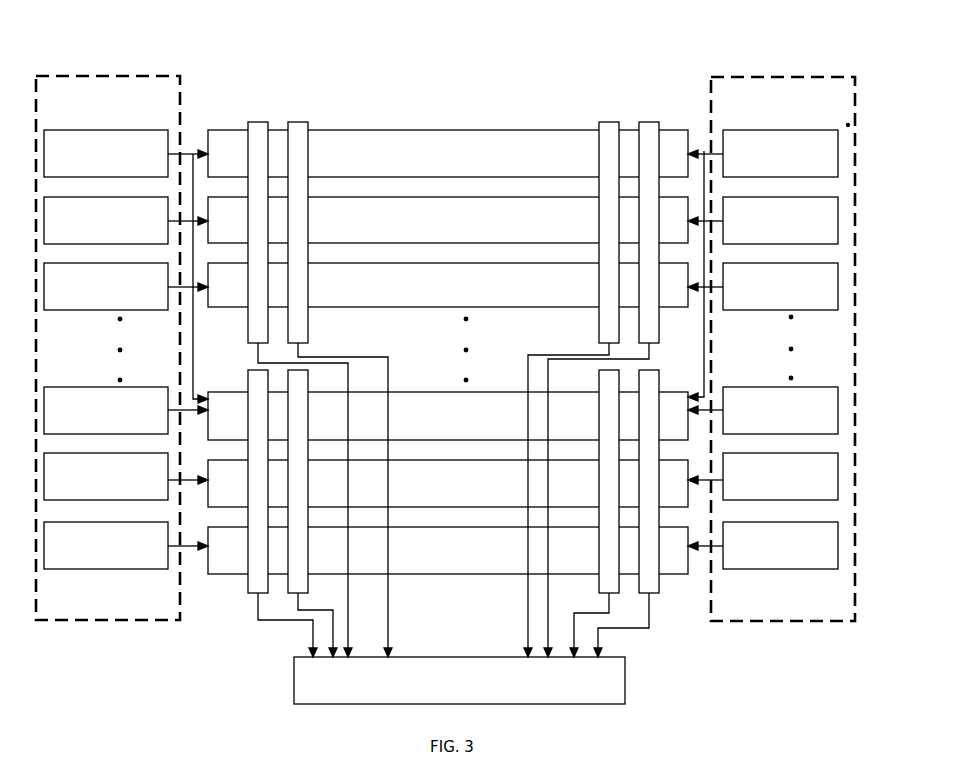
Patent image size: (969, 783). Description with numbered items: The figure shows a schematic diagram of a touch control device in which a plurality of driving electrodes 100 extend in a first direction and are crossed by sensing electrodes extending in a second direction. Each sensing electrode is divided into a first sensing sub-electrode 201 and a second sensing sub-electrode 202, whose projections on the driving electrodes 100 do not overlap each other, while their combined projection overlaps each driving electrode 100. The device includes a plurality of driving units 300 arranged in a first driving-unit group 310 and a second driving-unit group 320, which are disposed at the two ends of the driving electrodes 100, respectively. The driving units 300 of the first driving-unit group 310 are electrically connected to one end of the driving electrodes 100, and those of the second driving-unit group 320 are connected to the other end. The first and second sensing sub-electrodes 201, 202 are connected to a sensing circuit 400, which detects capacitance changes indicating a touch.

The driving electrodes 100 is at (430, 145).
The first sensing sub-electrode 201 is at (645, 157).
The second sensing sub-electrode 202 is at (652, 393).
The driving unit 300 is at (441, 349).
The first driving-unit group 310 is at (80, 72).
The second driving-unit group 320 is at (748, 72).
The sensing circuit 400 is at (459, 680).